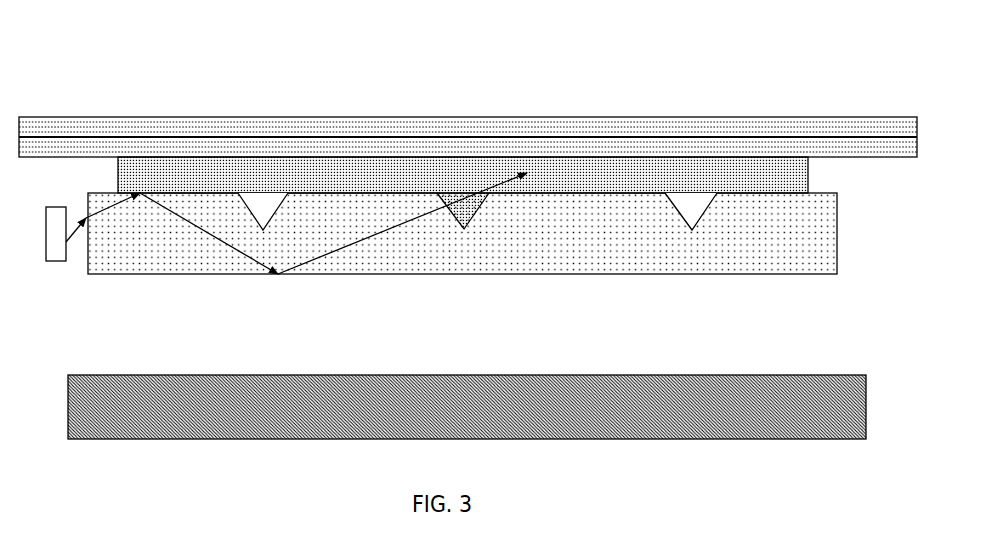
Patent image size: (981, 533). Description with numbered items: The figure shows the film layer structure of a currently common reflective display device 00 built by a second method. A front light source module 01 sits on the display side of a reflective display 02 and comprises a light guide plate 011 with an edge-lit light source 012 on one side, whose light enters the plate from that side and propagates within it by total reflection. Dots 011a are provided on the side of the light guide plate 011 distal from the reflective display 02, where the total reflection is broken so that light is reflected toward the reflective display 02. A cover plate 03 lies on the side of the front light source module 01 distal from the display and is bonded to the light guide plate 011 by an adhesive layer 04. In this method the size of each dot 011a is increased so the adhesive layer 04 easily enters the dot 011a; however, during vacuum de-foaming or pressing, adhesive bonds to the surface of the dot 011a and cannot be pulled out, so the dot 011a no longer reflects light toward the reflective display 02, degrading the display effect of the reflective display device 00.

The reflective display device 00 is at (44, 33).
The front light source module 01 is at (441, 225).
The light guide plate 011 is at (158, 260).
The dot 011a is at (245, 198).
The light source 012 is at (89, 262).
The reflective display 02 is at (720, 375).
The cover plate 03 is at (842, 119).
The adhesive layer 04 is at (805, 163).